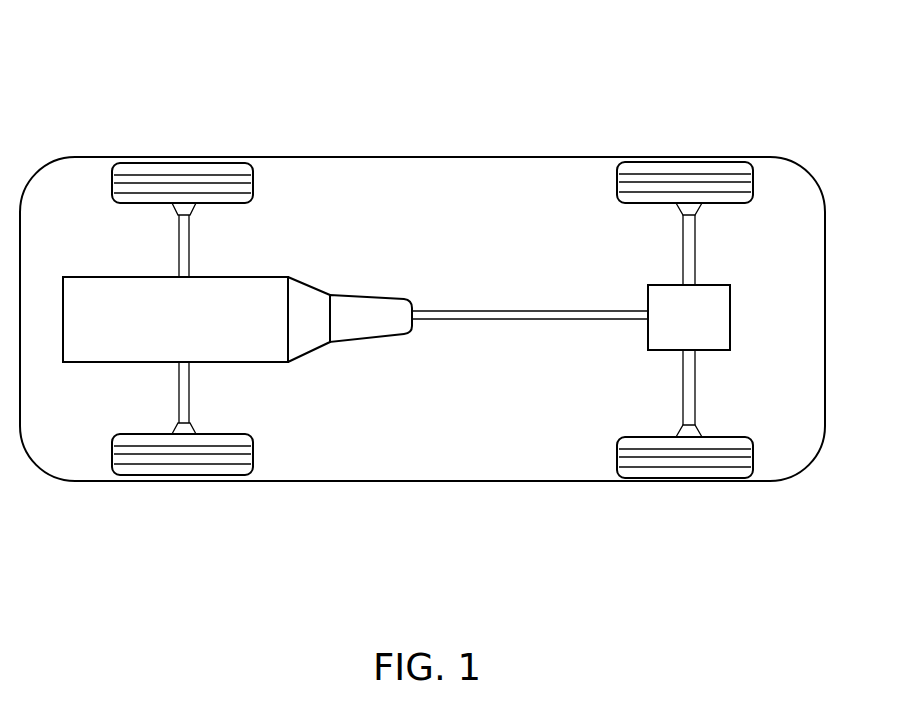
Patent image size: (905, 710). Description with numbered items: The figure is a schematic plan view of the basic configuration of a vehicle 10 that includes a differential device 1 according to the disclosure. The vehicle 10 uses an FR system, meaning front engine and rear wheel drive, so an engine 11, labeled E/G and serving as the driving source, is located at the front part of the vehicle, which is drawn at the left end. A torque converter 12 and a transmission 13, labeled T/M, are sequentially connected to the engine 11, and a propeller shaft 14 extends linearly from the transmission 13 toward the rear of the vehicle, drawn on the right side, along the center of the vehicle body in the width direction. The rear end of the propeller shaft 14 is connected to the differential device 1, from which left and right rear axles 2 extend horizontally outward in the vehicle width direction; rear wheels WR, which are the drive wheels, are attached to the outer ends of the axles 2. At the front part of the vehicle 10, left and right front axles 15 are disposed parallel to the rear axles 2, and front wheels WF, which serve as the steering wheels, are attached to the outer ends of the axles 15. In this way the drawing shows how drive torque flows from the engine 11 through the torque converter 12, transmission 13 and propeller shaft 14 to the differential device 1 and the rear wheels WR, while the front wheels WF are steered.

The vehicle 10 is at (560, 41).
The engine 11 is at (175, 349).
The torque converter 12 is at (313, 294).
The transmission 13 is at (374, 289).
The propeller shaft 14 is at (530, 285).
The front axles 15 is at (211, 318).
The differential device 1 is at (698, 286).
The rear axles 2 is at (663, 320).
The front wheels WF is at (182, 324).
The rear wheels WR is at (685, 328).